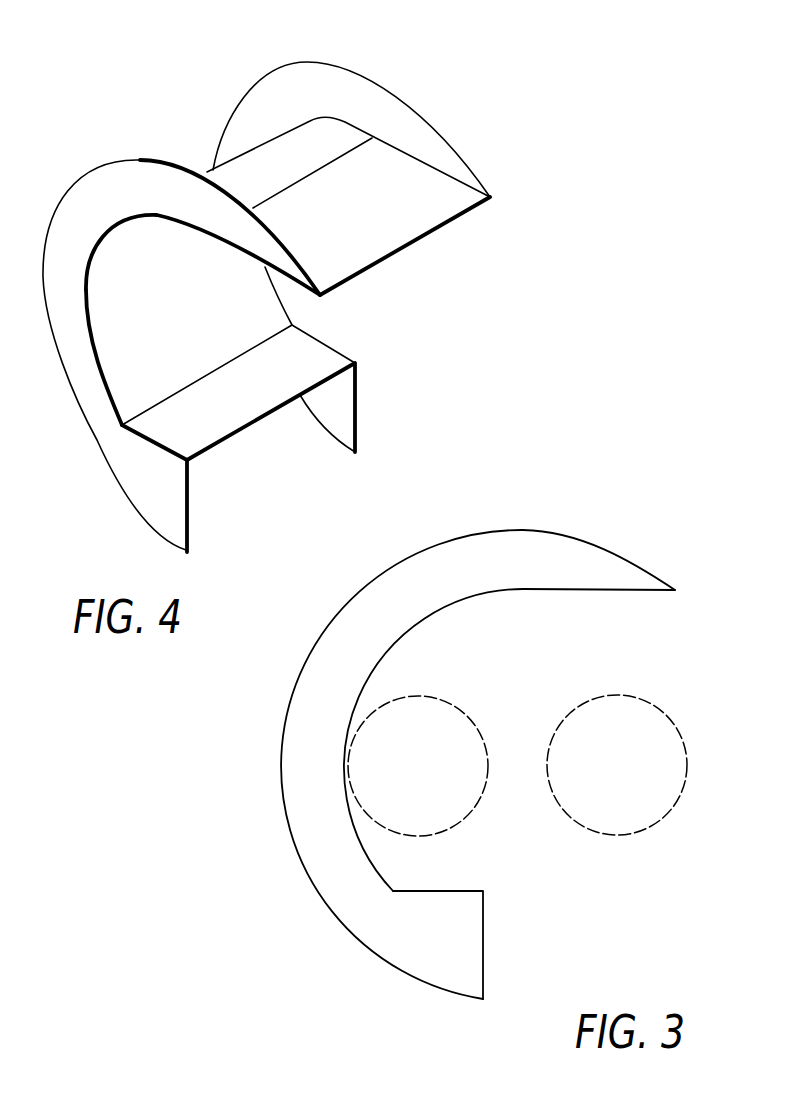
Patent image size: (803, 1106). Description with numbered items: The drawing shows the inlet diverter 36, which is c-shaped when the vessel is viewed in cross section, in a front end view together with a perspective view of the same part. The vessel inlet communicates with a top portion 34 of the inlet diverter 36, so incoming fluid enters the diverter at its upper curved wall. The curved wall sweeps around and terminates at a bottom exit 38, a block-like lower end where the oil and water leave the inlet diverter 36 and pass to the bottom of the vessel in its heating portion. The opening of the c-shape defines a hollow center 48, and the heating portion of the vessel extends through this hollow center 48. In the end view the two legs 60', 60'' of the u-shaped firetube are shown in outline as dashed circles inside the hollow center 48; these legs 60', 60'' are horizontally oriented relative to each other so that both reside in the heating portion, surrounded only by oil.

In FIG. 4, the top portion 34 is at (360, 193).
In FIG. 3, the top portion 34 is at (565, 547).
In FIG. 4, the inlet diverter 36 is at (502, 170).
In FIG. 3, the inlet diverter 36 is at (645, 542).
In FIG. 4, the bottom exit 38 is at (265, 458).
In FIG. 3, the bottom exit 38 is at (483, 943).
In FIG. 4, the hollow center 48 is at (323, 317).
In FIG. 3, the hollow center 48 is at (553, 685).
In FIG. 3, the first leg of firetube 60' is at (641, 742).
In FIG. 3, the second leg of firetube 60'' is at (433, 730).